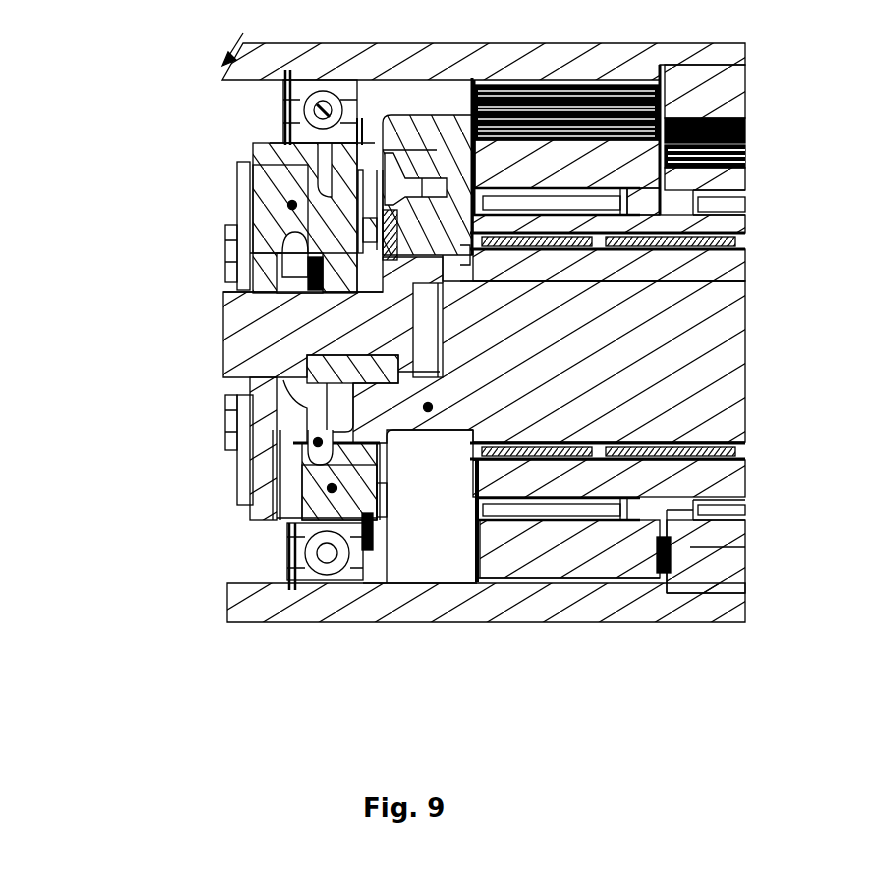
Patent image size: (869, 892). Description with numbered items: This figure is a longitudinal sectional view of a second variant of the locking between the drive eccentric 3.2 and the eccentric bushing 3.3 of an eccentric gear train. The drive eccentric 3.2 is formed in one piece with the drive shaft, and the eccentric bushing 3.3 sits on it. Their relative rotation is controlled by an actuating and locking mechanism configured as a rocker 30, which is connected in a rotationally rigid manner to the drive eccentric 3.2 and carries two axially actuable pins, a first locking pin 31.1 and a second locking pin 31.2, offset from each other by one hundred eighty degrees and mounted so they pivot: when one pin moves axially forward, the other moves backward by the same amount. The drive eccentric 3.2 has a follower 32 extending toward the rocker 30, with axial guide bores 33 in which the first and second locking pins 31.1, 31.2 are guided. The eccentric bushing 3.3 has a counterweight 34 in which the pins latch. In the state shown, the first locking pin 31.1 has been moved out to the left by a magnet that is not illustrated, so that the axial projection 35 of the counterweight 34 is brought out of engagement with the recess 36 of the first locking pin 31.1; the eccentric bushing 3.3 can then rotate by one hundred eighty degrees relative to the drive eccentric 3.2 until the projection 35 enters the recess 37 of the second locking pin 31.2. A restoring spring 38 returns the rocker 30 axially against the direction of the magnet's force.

The drive eccentric 3.2 is at (715, 387).
The eccentric bushing 3.3 is at (700, 224).
The rocker 30 is at (318, 442).
The first locking pin 31.1 is at (292, 205).
The second locking pin 31.2 is at (332, 488).
The follower 32 is at (428, 407).
The axial guide bores 33 is at (320, 195).
The counterweight 34 is at (292, 145).
The axial projection 35 is at (357, 247).
The recess 36 is at (358, 223).
The recess 37 is at (370, 497).
The restoring spring 38 is at (383, 230).